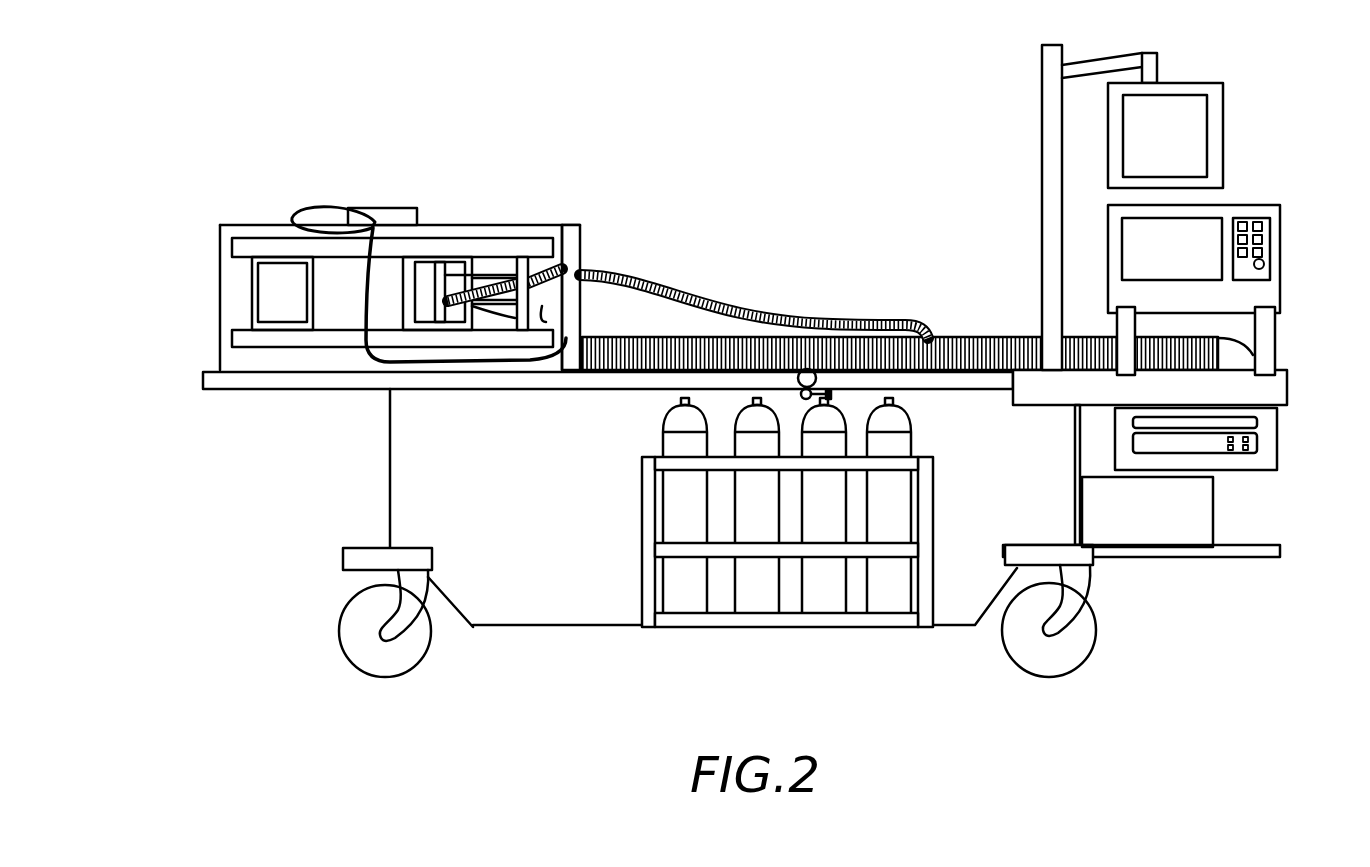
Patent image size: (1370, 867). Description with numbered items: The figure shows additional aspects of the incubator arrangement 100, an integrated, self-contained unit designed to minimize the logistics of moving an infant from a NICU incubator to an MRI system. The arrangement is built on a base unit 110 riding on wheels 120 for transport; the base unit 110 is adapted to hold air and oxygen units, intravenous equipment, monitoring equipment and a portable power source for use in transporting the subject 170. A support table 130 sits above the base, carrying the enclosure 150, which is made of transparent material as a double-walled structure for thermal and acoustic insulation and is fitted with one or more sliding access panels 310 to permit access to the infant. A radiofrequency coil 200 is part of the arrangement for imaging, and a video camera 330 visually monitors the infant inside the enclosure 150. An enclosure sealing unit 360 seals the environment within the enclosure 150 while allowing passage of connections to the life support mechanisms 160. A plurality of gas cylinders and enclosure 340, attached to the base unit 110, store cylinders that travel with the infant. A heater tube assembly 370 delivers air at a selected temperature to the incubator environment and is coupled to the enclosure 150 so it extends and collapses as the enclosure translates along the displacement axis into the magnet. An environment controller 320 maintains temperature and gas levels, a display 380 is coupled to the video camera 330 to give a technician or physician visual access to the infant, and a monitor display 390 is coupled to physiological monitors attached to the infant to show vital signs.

The incubator arrangement 100 is at (780, 696).
The base unit 110 is at (1023, 507).
The wheels 120 is at (415, 648).
The support table 130 is at (205, 378).
The enclosure 150 is at (233, 285).
The life support mechanisms 160 is at (767, 307).
The subject 170 is at (418, 305).
The radiofrequency (RF) coil 200 is at (528, 266).
The sliding access panels 310 is at (278, 305).
The environment controller 320 is at (1265, 440).
The video camera 330 is at (374, 210).
The gas cylinders and enclosure 340 is at (928, 613).
The enclosure sealing unit 360 is at (583, 255).
The heater tube assembly 370 is at (1200, 342).
The display 380 is at (1216, 130).
The monitor display 390 is at (1258, 270).